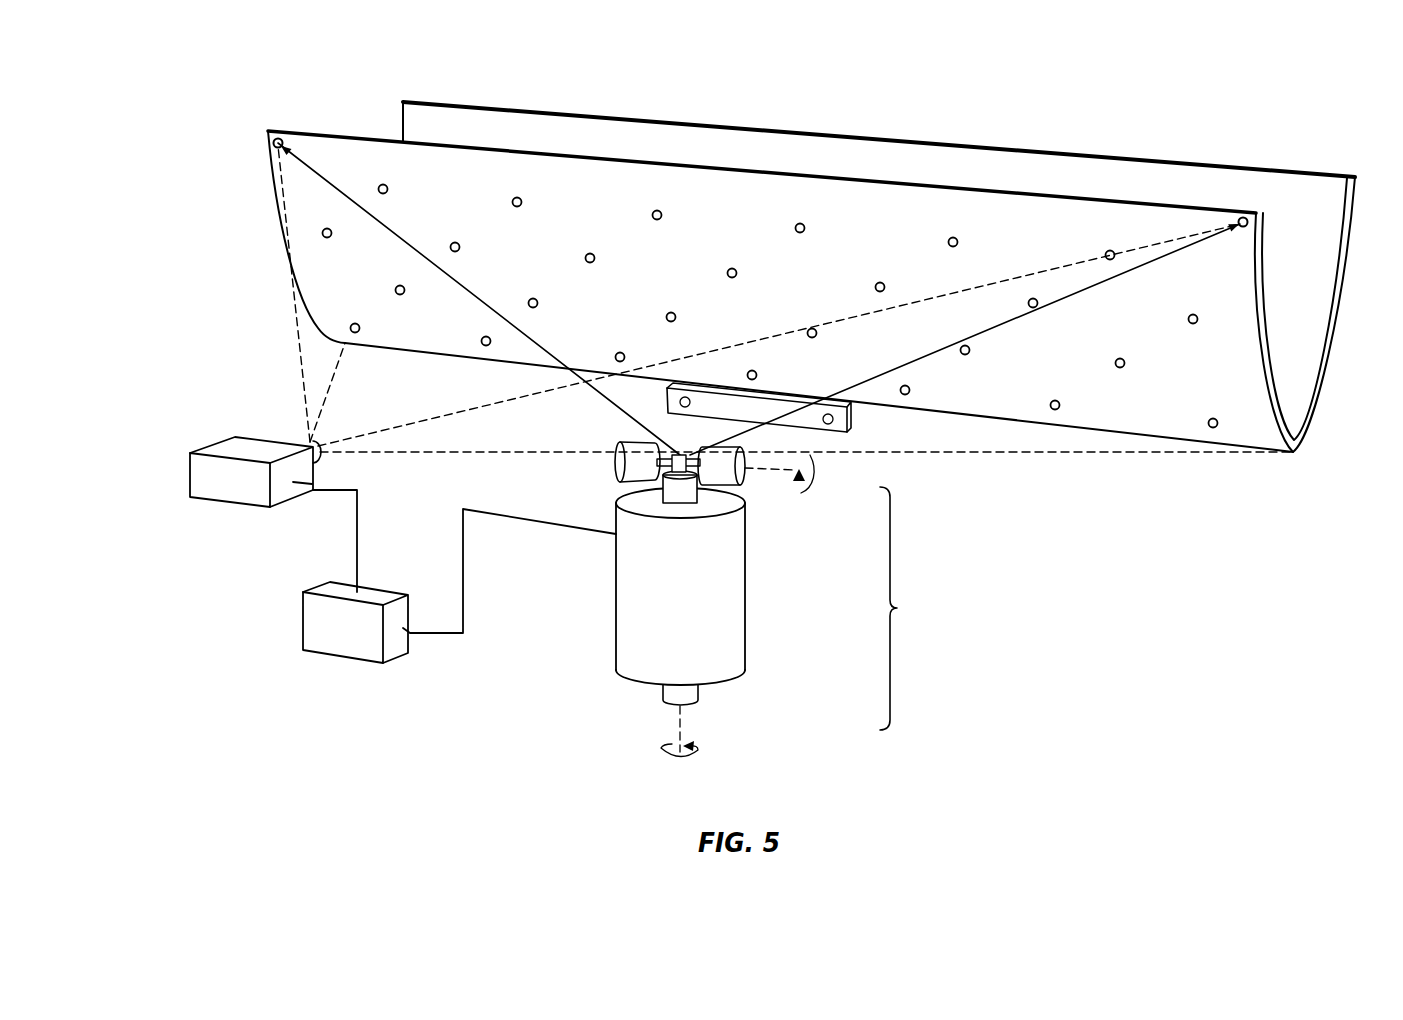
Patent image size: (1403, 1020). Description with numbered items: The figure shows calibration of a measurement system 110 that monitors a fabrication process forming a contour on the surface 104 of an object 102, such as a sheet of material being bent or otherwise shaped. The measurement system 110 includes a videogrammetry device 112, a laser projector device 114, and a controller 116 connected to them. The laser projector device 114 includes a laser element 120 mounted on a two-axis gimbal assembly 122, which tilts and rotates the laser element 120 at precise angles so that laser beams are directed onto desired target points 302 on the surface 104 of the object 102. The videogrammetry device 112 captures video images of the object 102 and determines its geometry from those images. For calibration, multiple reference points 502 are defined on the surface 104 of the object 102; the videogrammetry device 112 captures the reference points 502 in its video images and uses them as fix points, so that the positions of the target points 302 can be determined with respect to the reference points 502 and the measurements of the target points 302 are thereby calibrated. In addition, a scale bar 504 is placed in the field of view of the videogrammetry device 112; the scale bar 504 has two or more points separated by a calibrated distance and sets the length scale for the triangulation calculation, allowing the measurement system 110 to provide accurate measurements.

The object 102 is at (1102, 150).
The surface 104 is at (340, 156).
The measurement system 110 is at (912, 608).
The videogrammetry device 112 is at (233, 488).
The laser projector device 114 is at (722, 650).
The controller 116 is at (345, 647).
The laser element 120 is at (683, 452).
The two-axis gimbal assembly 122 is at (618, 462).
The target points 302 is at (458, 245).
The reference points 502 is at (275, 140).
The scale bar 504 is at (842, 418).